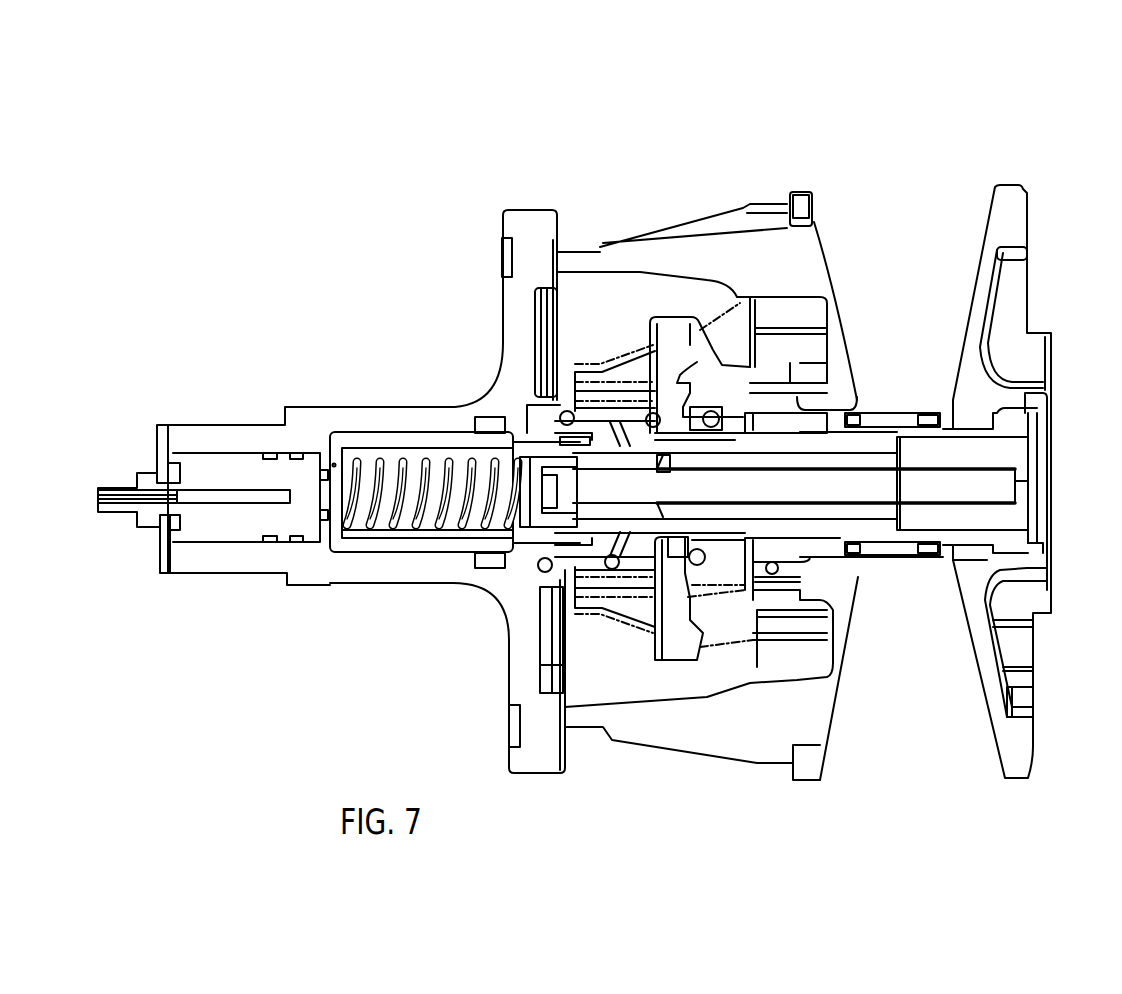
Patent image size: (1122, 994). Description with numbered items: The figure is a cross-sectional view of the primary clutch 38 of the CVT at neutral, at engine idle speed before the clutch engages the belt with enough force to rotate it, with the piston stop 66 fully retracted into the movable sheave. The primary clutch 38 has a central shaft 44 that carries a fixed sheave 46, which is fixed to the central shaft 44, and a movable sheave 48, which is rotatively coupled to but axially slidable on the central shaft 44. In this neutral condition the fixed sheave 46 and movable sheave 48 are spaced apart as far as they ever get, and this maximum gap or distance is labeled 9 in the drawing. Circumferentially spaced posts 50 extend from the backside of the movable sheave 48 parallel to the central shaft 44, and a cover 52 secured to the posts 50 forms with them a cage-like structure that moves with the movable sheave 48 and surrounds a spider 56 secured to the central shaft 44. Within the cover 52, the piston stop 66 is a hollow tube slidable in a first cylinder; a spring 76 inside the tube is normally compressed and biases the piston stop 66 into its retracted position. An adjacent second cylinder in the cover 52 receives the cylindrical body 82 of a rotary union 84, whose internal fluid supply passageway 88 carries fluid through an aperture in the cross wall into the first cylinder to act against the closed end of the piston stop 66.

The primary clutch 38 is at (682, 141).
The central shaft 44 is at (535, 530).
The fixed sheave 46 is at (1003, 212).
The movable sheave 48 is at (808, 228).
The posts 50 is at (603, 258).
The cover 52 is at (503, 218).
The spider 56 is at (727, 393).
The piston stop 66 is at (425, 428).
The spring 76 is at (367, 520).
The cylindrical body 82 is at (232, 460).
The rotary union 84 is at (144, 547).
The fluid supply passageway 88 is at (223, 505).
The gap 9 is at (939, 402).